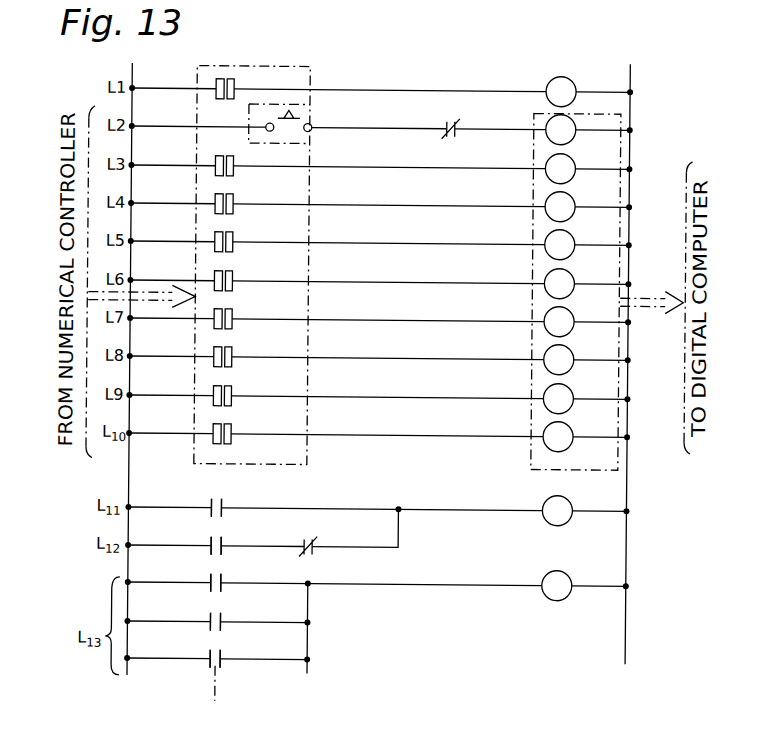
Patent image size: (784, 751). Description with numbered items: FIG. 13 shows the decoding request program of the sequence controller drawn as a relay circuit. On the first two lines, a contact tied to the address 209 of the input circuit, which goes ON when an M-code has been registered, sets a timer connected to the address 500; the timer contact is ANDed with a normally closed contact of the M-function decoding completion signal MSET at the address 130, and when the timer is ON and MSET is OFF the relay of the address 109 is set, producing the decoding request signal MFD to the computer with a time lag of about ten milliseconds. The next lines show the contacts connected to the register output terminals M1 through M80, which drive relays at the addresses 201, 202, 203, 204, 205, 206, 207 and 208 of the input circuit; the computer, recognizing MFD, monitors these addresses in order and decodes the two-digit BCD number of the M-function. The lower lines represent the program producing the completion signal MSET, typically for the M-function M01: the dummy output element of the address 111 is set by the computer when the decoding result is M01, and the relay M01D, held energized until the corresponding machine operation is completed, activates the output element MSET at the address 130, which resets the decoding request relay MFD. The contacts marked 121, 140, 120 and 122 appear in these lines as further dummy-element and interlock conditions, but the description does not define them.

The address of the input circuit 209 is at (339, 86).
The timer address 500 is at (472, 101).
The address of the M-function decoding completion signal MSET 130 is at (529, 357).
The address of the decoding request signal MFD 109 is at (583, 129).
The address of the input circuit 201 is at (380, 165).
The address of the input circuit 202 is at (380, 203).
The address of the input circuit 203 is at (380, 241).
The address of the input circuit 204 is at (379, 280).
The address of the input circuit 205 is at (379, 318).
The address of the input circuit 206 is at (379, 356).
The address of the input circuit 207 is at (378, 395).
The address of the input circuit 208 is at (378, 433).
The address of the dummy output element 111 is at (254, 504).
The relay M01D 121 is at (413, 562).
The relay mfin contact 140 is at (345, 542).
The relay m00d contact 120 is at (259, 579).
The relay m02d contact 122 is at (258, 655).